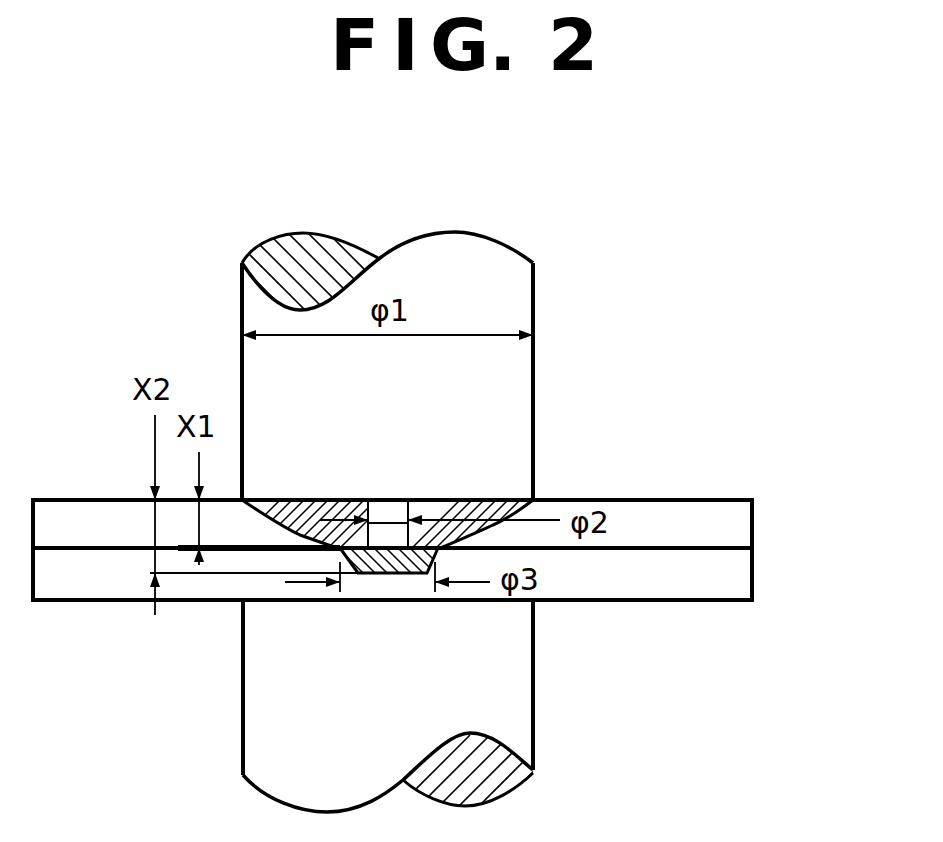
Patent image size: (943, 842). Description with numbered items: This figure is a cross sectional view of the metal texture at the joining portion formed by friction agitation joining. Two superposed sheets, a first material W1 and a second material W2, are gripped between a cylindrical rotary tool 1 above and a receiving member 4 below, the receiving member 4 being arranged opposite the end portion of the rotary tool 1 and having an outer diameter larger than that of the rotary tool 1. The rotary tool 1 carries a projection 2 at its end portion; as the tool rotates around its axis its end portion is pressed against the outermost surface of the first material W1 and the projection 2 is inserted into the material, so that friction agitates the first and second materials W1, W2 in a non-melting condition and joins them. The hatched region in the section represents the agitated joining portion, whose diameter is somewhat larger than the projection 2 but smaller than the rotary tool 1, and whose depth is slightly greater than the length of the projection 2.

The rotary tool 1 is at (533, 302).
The projection 2 is at (395, 508).
The receiving member 4 is at (533, 680).
The first material W1 is at (752, 522).
The second material W2 is at (752, 576).